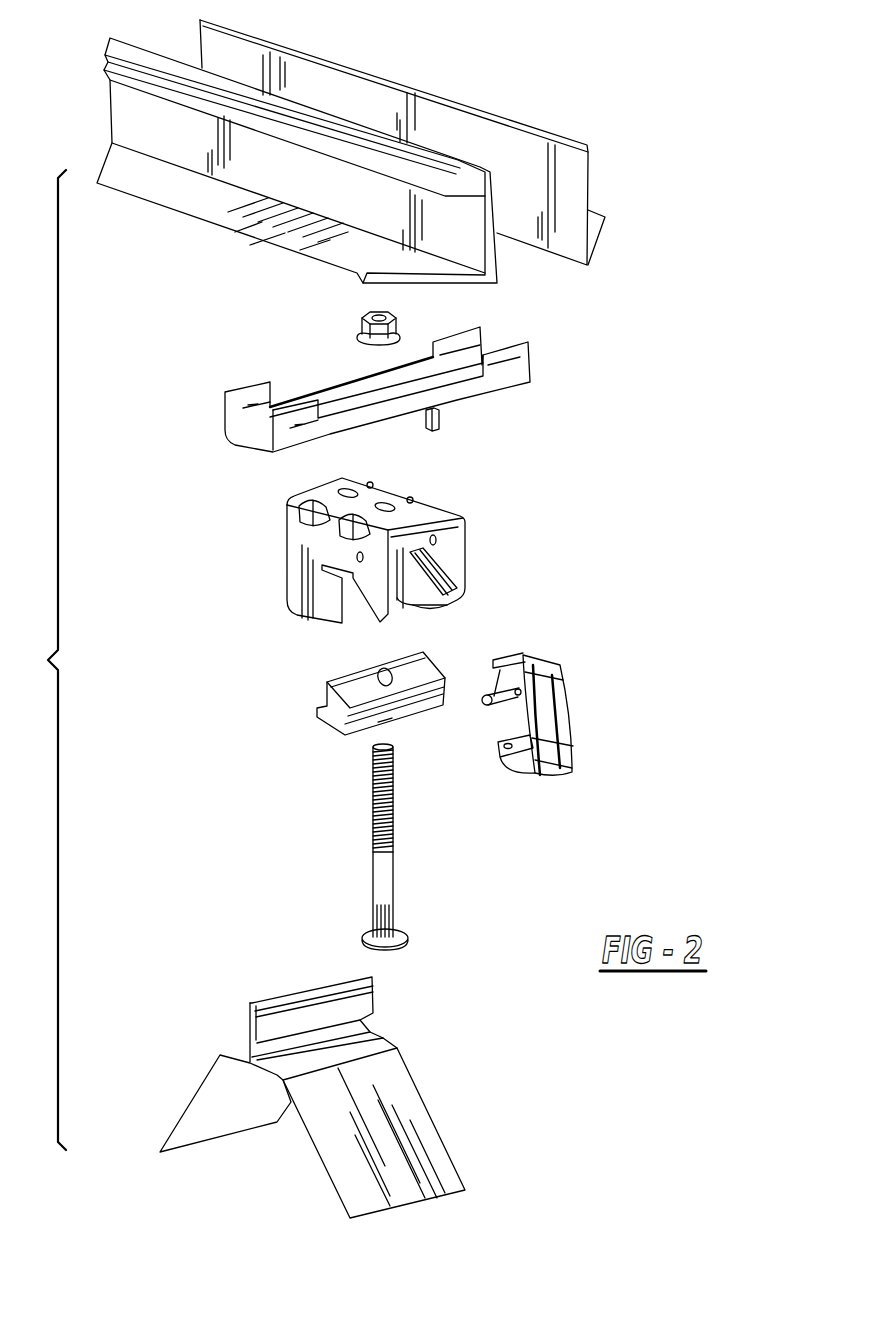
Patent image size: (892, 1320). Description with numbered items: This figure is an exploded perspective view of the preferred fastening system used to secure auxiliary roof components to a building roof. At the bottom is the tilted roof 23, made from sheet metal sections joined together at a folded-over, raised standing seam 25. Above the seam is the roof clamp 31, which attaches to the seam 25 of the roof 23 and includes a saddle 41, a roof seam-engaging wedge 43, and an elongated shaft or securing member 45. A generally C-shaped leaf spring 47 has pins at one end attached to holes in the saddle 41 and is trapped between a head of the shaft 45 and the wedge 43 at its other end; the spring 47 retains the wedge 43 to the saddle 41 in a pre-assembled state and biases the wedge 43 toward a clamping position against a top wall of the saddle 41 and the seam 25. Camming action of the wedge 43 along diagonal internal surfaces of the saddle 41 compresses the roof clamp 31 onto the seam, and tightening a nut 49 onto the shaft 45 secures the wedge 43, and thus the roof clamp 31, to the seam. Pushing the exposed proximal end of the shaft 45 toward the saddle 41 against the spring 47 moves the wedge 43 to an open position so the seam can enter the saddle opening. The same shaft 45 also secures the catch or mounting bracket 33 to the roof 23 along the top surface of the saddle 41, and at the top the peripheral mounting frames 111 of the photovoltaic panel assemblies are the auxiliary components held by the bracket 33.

The peripheral mounting frame 111 is at (181, 187).
The roof clamp 31 is at (613, 493).
The nut 49 is at (360, 323).
The catch or mounting bracket 33 is at (500, 395).
The saddle 41 is at (302, 558).
The roof seam-engaging wedge 43 is at (332, 715).
The C-shaped leaf spring 47 is at (562, 702).
The elongated shaft or securing member 45 is at (385, 884).
The raised standing seam 25 is at (363, 1002).
The tilted roof 23 is at (410, 1130).